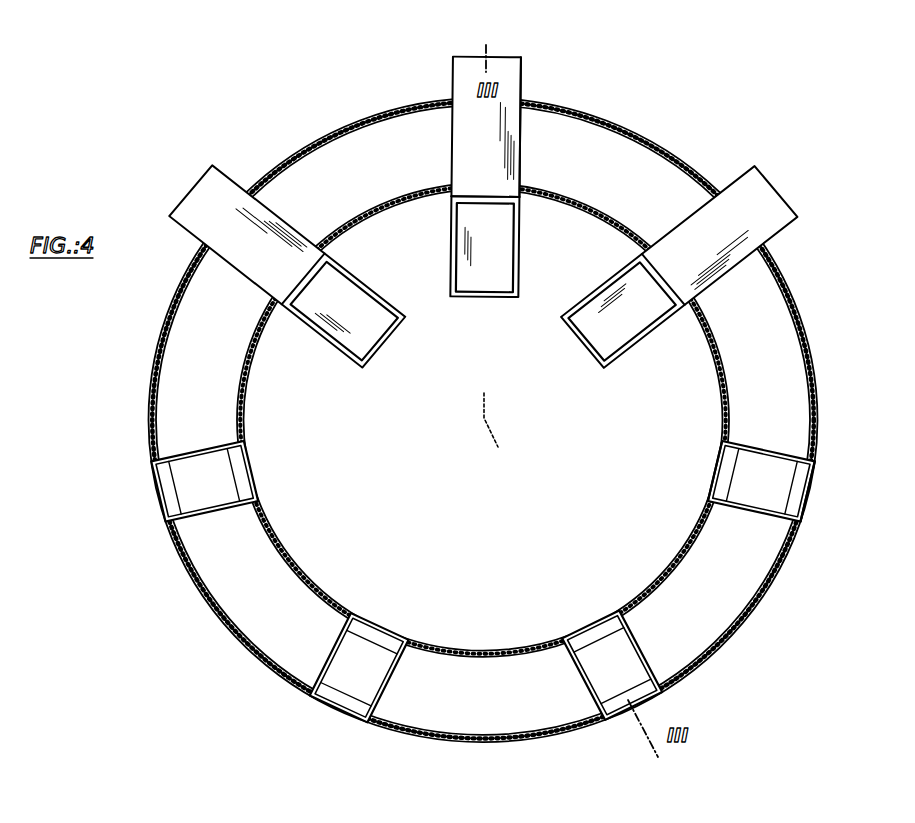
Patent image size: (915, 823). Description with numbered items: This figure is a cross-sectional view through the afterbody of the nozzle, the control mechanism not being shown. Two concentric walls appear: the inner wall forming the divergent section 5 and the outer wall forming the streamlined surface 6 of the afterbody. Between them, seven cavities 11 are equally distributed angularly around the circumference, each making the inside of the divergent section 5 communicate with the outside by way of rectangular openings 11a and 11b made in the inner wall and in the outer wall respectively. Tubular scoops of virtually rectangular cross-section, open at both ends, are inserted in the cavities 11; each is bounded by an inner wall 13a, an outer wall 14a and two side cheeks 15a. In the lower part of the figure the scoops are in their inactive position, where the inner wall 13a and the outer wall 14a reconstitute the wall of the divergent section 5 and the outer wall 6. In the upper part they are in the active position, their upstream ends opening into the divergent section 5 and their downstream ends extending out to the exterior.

The divergent section 5 is at (694, 530).
The streamlined surface 6 is at (783, 568).
The cavity 11 is at (450, 129).
The rectangular opening 11a is at (450, 199).
The rectangular opening 11b is at (523, 97).
The inner wall 13a is at (395, 340).
The outer wall 14a is at (813, 497).
The side cheek 15a is at (386, 680).